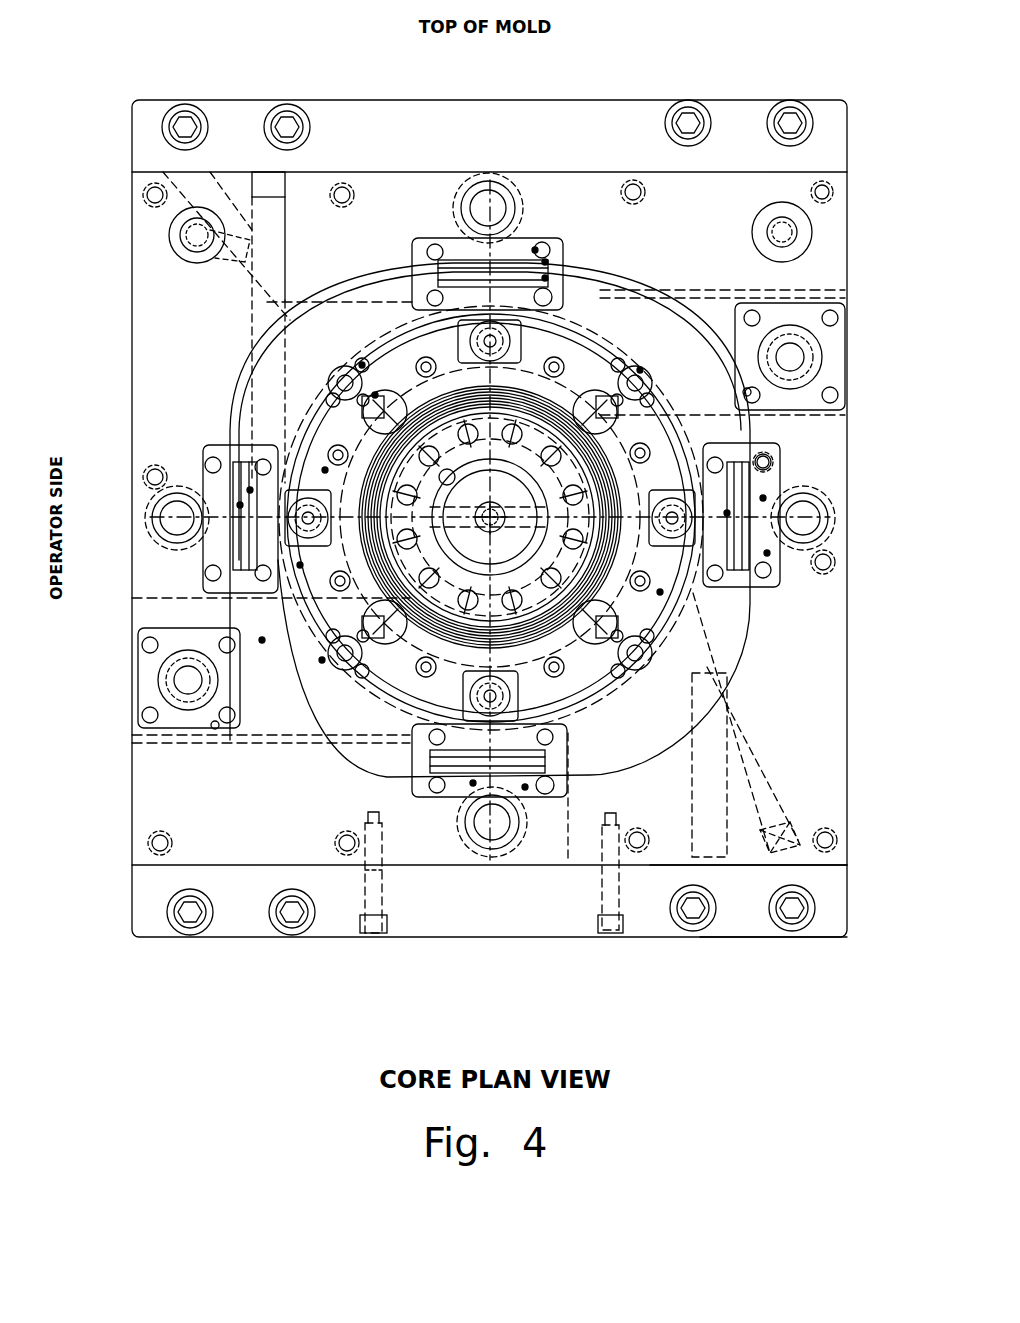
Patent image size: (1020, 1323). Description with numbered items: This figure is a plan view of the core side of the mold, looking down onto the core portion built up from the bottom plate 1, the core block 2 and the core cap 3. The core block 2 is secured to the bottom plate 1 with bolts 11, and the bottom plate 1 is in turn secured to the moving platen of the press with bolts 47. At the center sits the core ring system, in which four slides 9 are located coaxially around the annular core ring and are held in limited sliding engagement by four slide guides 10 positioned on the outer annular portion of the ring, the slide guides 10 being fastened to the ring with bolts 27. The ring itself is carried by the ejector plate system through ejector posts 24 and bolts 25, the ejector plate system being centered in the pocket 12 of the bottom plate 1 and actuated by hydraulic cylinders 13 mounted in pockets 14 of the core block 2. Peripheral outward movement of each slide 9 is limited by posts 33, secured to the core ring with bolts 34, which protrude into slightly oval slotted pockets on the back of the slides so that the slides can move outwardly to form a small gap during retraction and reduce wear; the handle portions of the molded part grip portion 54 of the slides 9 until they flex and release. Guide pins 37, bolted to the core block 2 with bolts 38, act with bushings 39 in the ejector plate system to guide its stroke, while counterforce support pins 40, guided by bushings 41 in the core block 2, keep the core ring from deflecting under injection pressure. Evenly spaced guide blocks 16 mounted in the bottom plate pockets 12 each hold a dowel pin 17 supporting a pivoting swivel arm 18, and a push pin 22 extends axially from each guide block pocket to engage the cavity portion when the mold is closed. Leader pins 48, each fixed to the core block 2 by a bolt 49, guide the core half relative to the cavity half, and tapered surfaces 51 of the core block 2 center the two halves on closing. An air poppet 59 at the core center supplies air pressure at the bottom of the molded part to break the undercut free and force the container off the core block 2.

The bottom plate 1 is at (745, 905).
The core block 2 is at (803, 780).
The core cap 3 is at (615, 545).
The slides 9 is at (320, 490).
The slide guides 10 is at (383, 410).
The bolts 11 is at (160, 843).
The pocket 12 is at (262, 640).
The hydraulic cylinders 13 is at (200, 700).
The pockets 14 is at (215, 725).
The guide blocks 16 is at (767, 553).
The dowel pin 17 is at (340, 600).
The swivel arm 18 is at (220, 548).
The push pin 22 is at (177, 518).
The ejector posts 24 is at (250, 490).
The bolts 25 is at (240, 505).
The bolts 27 is at (325, 470).
The posts 33 is at (370, 818).
The bolts 34 is at (610, 873).
The guide pins 37 is at (345, 383).
The bolts 38 is at (333, 400).
The bushings 39 is at (363, 400).
The counterforce support pins 40 is at (362, 365).
The bushings 41 is at (375, 395).
The bolts 47 is at (698, 913).
The leader pins 48 is at (215, 238).
The bolt 49 is at (197, 235).
The tapered surfaces 51 is at (773, 842).
The portion 54 is at (620, 330).
The air poppet 59 is at (447, 477).